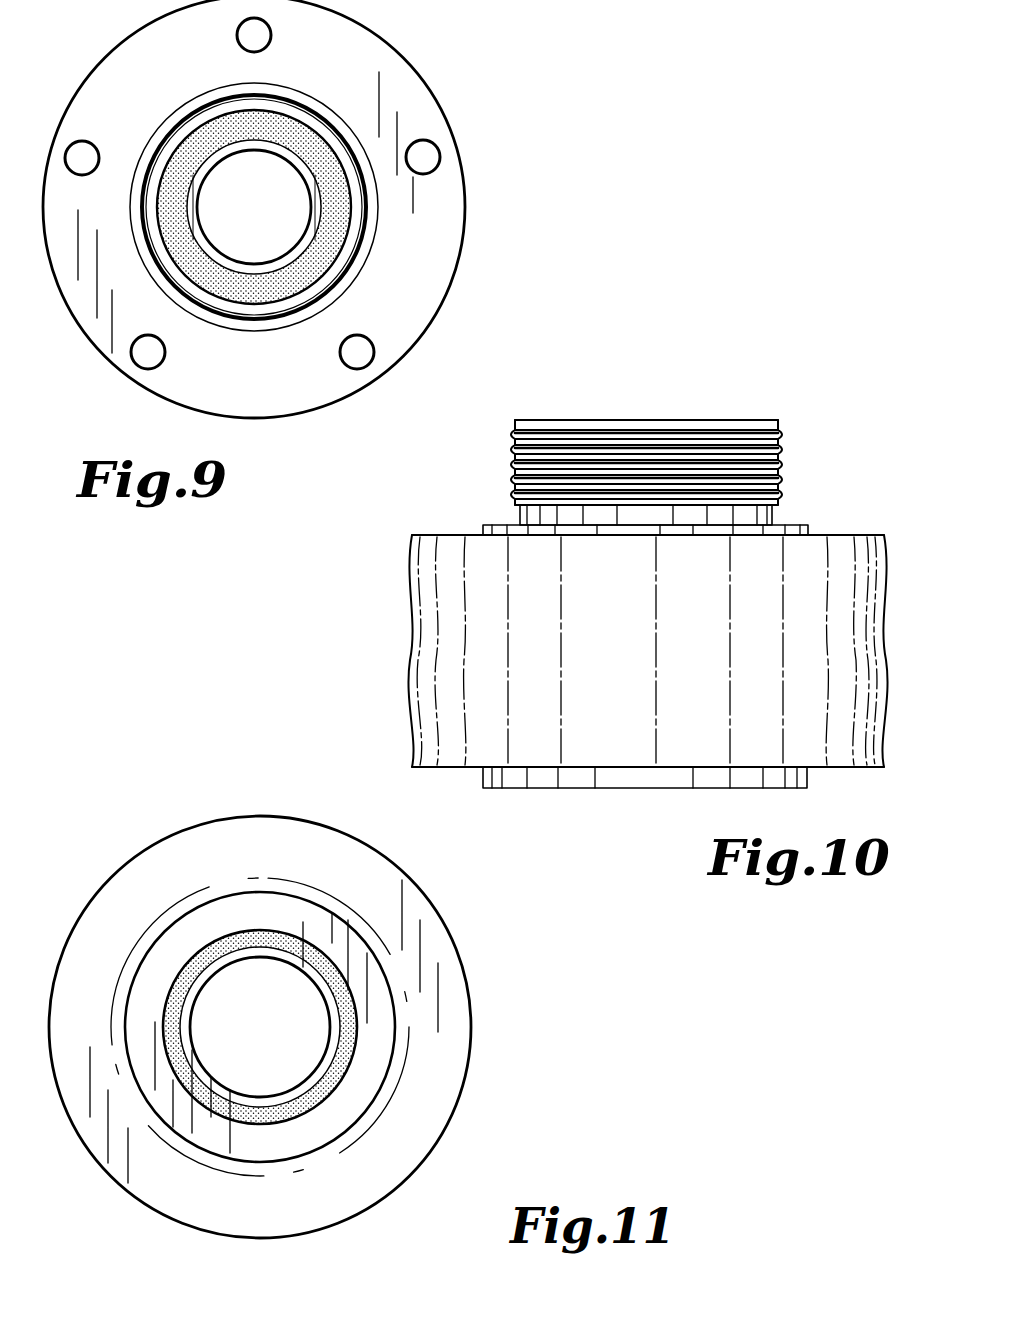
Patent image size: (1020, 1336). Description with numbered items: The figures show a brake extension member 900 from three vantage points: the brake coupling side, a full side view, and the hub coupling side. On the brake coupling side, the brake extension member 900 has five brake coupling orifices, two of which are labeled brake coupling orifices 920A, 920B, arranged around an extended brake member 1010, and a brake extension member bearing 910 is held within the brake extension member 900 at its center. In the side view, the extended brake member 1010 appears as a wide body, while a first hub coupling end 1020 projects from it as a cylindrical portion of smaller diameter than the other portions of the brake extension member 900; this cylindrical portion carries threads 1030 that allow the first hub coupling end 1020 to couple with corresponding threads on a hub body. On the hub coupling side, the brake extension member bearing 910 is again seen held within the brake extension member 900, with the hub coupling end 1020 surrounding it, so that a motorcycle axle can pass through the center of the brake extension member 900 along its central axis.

In FIG. 9, the brake extension member 900 is at (472, 108).
In FIG. 10, the brake extension member 900 is at (770, 387).
In FIG. 11, the brake extension member 900 is at (183, 778).
In FIG. 9, the brake extension member bearing 910 is at (307, 132).
In FIG. 11, the brake extension member bearing 910 is at (282, 931).
In FIG. 9, the brake coupling orifice 920A is at (236, 48).
In FIG. 9, the brake coupling orifice 920B is at (340, 358).
In FIG. 9, the extended brake member 1010 is at (377, 198).
In FIG. 10, the extended brake member 1010 is at (480, 782).
In FIG. 10, the first hub coupling end 1020 is at (468, 417).
In FIG. 11, the first hub coupling end 1020 is at (168, 972).
In FIG. 10, the threads 1030 is at (782, 443).